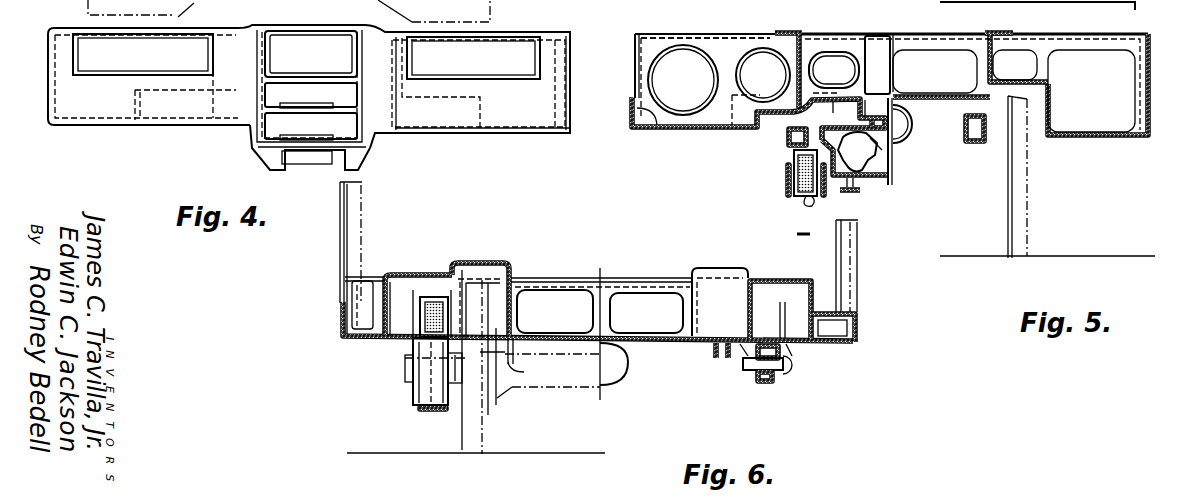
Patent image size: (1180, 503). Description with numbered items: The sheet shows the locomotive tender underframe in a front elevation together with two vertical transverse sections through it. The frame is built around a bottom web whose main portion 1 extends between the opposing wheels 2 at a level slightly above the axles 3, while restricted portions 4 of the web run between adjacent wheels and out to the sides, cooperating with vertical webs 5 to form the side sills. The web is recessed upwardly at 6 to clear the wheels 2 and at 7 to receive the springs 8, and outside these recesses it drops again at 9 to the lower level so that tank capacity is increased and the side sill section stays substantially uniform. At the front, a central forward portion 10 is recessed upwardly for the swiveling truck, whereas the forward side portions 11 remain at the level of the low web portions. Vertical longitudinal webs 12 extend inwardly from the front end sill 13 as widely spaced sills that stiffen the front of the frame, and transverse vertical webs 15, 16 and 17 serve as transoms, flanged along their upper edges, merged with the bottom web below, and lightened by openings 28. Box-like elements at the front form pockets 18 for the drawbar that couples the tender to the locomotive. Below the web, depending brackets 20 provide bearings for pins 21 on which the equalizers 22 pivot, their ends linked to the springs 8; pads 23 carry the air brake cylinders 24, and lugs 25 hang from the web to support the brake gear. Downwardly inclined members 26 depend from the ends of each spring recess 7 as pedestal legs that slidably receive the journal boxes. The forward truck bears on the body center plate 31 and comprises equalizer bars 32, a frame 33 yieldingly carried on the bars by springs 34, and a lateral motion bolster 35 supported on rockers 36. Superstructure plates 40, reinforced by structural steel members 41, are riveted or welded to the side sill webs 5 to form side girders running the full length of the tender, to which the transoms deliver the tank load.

In FIG. 6, the bottom web 1 is at (555, 311).
In FIG. 5, the wheels 2 is at (1030, 233).
In FIG. 6, the wheels 2 is at (496, 447).
In FIG. 6, the axles 3 is at (568, 390).
In FIG. 6, the restricted portions 4 is at (760, 345).
In FIG. 5, the vertical webs 5 is at (628, 111).
In FIG. 6, the vertical webs 5 is at (860, 326).
In FIG. 6, the recess 6 is at (497, 292).
In FIG. 6, the recess 7 is at (401, 302).
In FIG. 6, the springs 8 is at (432, 300).
In FIG. 6, the lower web portion 9 is at (367, 334).
In FIG. 4, the central forward portion 10 is at (183, 102).
In FIG. 5, the central forward portion 10 is at (772, 125).
In FIG. 4, the forward side portions 11 is at (516, 126).
In FIG. 5, the forward side portions 11 is at (697, 130).
In FIG. 4, the vertical longitudinal webs 12 is at (410, 63).
In FIG. 5, the vertical longitudinal webs 12 is at (807, 53).
In FIG. 4, the front end sill 13 is at (154, 77).
In FIG. 6, the transverse vertical web 15 is at (678, 292).
In FIG. 5, the transverse vertical web 16 is at (950, 47).
In FIG. 5, the transverse vertical web 17 is at (721, 53).
In FIG. 4, the pockets 18 is at (311, 85).
In FIG. 6, the depending brackets 20 is at (782, 372).
In FIG. 6, the pins 21 is at (743, 360).
In FIG. 6, the equalizers 22 is at (764, 383).
In FIG. 6, the pads 23 is at (631, 354).
In FIG. 6, the air brake cylinders 24 is at (610, 389).
In FIG. 6, the lugs 25 is at (527, 372).
In FIG. 6, the downwardly inclined members 26 is at (413, 392).
In FIG. 5, the openings 28 is at (891, 84).
In FIG. 6, the openings 28 is at (646, 313).
In FIG. 5, the body center plate 31 is at (868, 105).
In FIG. 5, the equalizer bars 32 is at (787, 192).
In FIG. 5, the frame 33 is at (788, 144).
In FIG. 5, the springs 34 is at (816, 206).
In FIG. 5, the lateral motion bolster 35 is at (878, 141).
In FIG. 5, the rockers 36 is at (866, 156).
In FIG. 6, the superstructure plates 40 is at (340, 233).
In FIG. 6, the structural steel members 41 is at (360, 224).